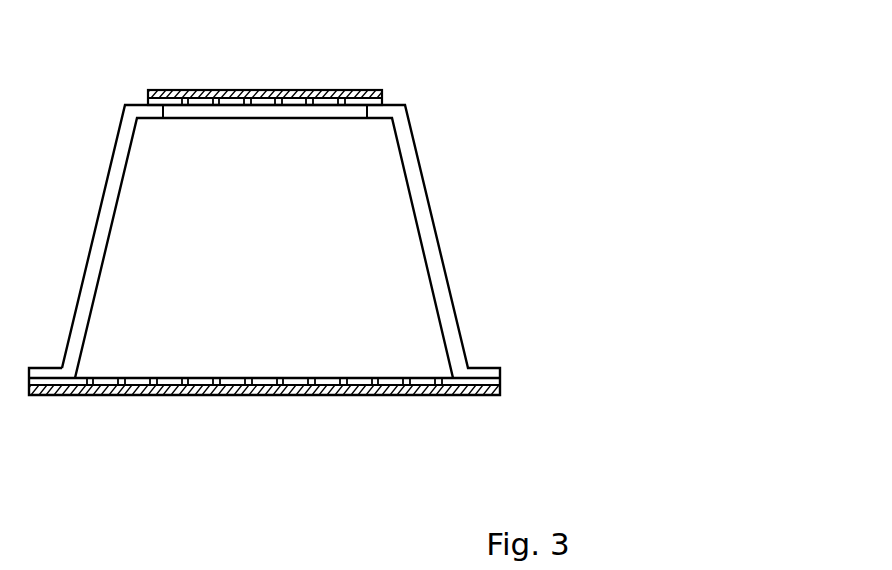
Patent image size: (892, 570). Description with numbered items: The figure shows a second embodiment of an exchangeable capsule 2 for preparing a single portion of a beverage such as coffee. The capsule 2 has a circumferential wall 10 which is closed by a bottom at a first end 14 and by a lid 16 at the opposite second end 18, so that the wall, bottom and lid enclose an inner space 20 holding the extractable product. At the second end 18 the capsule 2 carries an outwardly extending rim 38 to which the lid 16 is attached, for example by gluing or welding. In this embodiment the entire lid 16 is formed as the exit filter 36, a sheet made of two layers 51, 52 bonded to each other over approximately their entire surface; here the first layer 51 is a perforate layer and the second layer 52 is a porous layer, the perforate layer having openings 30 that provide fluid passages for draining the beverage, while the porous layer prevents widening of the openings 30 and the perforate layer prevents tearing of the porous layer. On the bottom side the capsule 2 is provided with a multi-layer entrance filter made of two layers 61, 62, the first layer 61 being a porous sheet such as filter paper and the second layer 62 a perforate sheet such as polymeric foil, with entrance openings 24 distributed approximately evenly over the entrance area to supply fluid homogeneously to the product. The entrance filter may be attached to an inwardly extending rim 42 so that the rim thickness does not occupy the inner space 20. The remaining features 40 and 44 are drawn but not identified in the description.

The exchangeable capsule 2 is at (296, 247).
The circumferential wall 10 is at (433, 262).
The first end 14 is at (400, 123).
The lid 16 is at (457, 392).
The second end 18 is at (455, 351).
The inner space 20 is at (163, 203).
The entrance openings 24 is at (196, 84).
The openings 30 is at (100, 368).
The exit filter 36 is at (299, 384).
The outwardly extending rim 38 is at (490, 372).
The flange 40 is at (70, 388).
The inwardly extending rim 42 is at (377, 112).
The top plate 44 is at (222, 66).
The first layer of exit filter 51 is at (495, 384).
The second layer of exit filter 52 is at (498, 395).
The first layer of entrance filter 61 is at (147, 92).
The second layer of entrance filter 62 is at (147, 100).